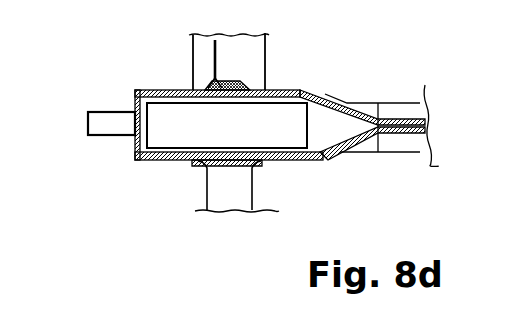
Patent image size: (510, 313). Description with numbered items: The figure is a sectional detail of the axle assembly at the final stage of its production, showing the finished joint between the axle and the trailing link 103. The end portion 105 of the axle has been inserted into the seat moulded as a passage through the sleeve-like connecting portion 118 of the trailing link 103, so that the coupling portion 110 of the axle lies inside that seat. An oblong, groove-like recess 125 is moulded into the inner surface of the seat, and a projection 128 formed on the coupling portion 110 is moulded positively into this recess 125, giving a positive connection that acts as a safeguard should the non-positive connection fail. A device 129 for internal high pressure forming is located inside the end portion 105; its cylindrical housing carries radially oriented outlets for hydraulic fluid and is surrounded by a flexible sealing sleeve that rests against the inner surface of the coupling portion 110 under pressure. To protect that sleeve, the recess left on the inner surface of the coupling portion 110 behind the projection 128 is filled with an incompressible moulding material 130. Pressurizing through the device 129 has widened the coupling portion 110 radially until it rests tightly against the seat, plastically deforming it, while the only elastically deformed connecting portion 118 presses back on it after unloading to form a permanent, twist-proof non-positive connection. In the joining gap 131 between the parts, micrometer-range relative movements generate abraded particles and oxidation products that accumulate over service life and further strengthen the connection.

The trailing link 103 is at (205, 191).
The end portion 105 is at (137, 156).
The coupling portion 110 is at (292, 149).
The connecting portion 118 is at (192, 92).
The recess 125 is at (230, 80).
The projection 128 is at (195, 90).
The device for internal high pressure forming 129 is at (203, 136).
The moulding material 130 is at (232, 81).
The joining gap 131 is at (160, 160).